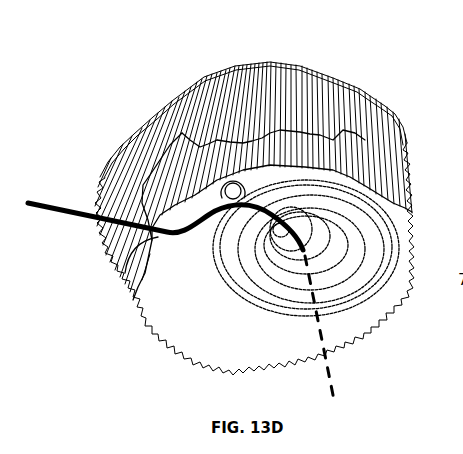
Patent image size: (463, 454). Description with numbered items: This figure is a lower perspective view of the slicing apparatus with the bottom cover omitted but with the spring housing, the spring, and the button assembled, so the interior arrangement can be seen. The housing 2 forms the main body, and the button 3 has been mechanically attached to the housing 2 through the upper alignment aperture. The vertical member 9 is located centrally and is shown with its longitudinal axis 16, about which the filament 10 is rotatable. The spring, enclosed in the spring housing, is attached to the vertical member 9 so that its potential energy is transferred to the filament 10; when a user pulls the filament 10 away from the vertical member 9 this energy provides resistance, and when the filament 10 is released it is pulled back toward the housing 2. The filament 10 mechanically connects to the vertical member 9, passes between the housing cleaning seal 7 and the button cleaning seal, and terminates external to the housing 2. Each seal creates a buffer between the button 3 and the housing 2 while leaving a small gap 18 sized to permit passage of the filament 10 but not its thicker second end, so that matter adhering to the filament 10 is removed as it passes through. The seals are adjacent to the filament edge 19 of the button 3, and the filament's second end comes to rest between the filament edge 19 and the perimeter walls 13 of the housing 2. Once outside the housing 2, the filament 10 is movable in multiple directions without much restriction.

The housing 2 is at (297, 108).
The button 3 is at (268, 143).
The housing cleaning seal 7 is at (125, 273).
The vertical member 9 is at (277, 215).
The filament 10 is at (59, 205).
The perimeter walls 13 is at (462, 160).
The longitudinal axis 16 is at (338, 391).
The gap 18 is at (335, 147).
The filament edge 19 is at (144, 202).